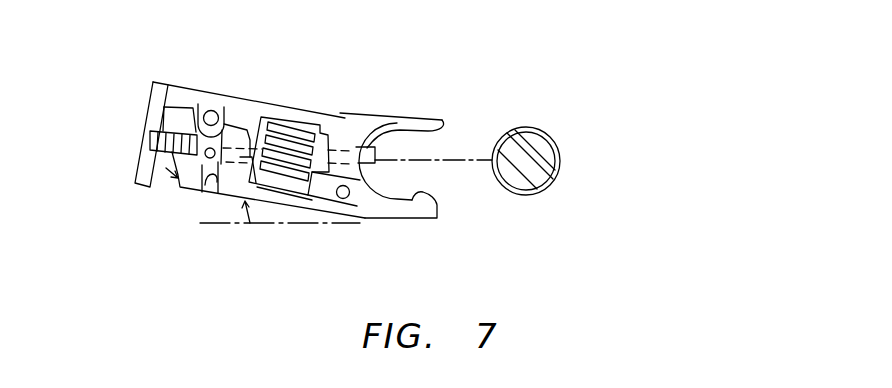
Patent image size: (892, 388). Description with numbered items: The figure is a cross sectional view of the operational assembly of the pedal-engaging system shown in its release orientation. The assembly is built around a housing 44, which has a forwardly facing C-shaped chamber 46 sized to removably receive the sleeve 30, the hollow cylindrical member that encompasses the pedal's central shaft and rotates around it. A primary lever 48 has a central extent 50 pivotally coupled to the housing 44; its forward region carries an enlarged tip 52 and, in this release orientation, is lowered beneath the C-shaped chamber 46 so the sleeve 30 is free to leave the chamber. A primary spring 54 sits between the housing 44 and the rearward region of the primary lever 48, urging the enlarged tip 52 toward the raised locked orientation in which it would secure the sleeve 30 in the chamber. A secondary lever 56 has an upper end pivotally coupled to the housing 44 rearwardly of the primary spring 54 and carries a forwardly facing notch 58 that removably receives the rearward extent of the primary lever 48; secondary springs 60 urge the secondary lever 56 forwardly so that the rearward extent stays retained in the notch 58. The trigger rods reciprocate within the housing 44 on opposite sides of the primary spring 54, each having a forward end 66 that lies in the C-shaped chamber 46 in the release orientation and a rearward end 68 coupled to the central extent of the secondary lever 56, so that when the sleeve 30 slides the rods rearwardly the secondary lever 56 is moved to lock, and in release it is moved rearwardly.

The sleeve 30 is at (562, 148).
The housing 44 is at (343, 116).
The C-shaped chamber 46 is at (412, 116).
The primary lever 48 is at (323, 200).
The central extent 50 is at (352, 203).
The enlarged tip 52 is at (445, 196).
The primary spring 54 is at (302, 110).
The secondary lever 56 is at (180, 192).
The forwardly facing notch 58 is at (208, 195).
The secondary springs 60 is at (175, 88).
The forward end 66 is at (376, 148).
The rearward end 68 is at (245, 101).